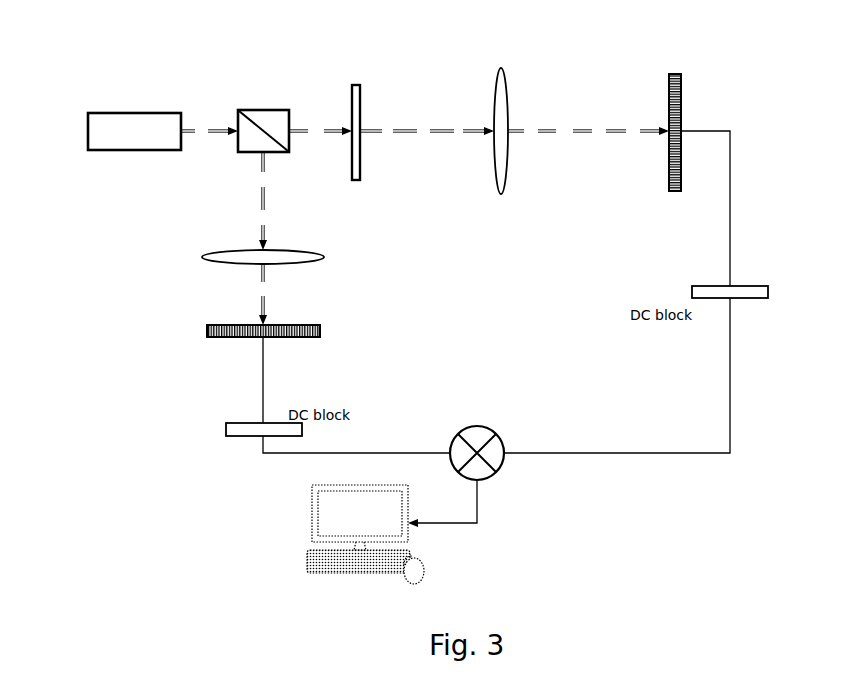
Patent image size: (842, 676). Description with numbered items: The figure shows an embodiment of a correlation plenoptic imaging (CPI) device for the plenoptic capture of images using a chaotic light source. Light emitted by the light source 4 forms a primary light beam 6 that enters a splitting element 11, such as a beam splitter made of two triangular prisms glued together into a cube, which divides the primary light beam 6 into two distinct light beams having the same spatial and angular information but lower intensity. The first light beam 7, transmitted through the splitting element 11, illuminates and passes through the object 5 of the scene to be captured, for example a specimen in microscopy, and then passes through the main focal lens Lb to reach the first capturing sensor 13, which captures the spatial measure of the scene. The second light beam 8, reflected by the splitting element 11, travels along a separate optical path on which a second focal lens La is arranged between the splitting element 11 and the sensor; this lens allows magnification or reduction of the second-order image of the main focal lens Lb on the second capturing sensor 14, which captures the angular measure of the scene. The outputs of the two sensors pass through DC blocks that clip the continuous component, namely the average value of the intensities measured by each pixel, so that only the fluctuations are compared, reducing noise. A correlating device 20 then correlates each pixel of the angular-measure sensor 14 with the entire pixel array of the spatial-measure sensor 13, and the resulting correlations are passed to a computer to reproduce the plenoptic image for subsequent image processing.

The light source 4 is at (119, 131).
The primary light beam 6 is at (209, 116).
The splitting element 11 is at (263, 117).
The first light beam 7 is at (479, 116).
The object 5 is at (352, 118).
The main focal lens Lb is at (496, 119).
The first capturing sensor 13 is at (672, 116).
The second light beam 8 is at (274, 238).
The second focal lens La is at (245, 257).
The second capturing sensor 14 is at (243, 337).
The correlating device 20 is at (477, 438).